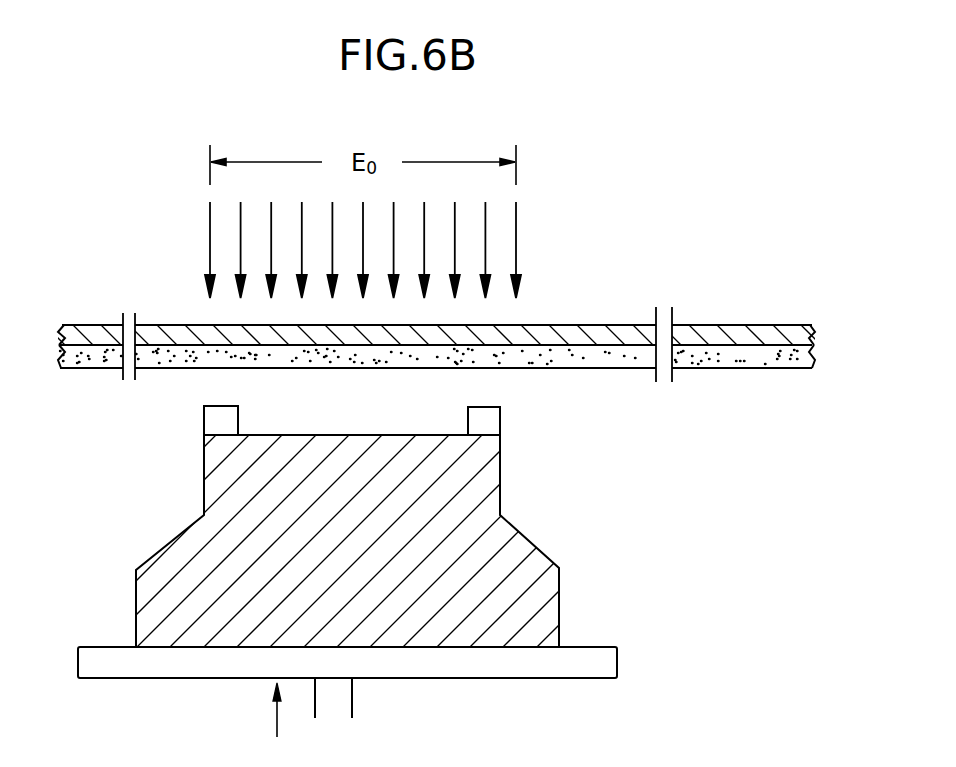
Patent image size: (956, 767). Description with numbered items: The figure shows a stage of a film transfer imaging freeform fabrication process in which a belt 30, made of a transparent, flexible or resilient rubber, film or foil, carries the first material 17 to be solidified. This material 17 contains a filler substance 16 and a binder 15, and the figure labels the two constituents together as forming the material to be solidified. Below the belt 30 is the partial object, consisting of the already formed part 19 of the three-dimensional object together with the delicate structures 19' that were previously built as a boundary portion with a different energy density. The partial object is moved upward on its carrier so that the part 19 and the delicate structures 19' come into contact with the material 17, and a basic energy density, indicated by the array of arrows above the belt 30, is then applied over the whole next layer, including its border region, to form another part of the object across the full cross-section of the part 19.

The belt 30 is at (600, 332).
The binder 15 is at (436, 387).
The filler substance 16 is at (383, 358).
The material to be solidified 17 is at (436, 387).
The part of the three-dimensional object 19 is at (393, 541).
The delicate structure 19' is at (368, 415).